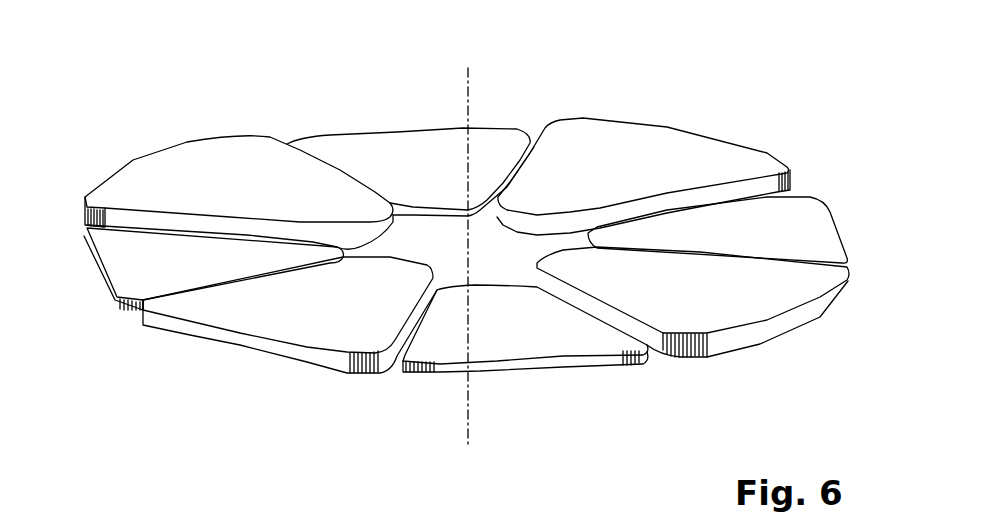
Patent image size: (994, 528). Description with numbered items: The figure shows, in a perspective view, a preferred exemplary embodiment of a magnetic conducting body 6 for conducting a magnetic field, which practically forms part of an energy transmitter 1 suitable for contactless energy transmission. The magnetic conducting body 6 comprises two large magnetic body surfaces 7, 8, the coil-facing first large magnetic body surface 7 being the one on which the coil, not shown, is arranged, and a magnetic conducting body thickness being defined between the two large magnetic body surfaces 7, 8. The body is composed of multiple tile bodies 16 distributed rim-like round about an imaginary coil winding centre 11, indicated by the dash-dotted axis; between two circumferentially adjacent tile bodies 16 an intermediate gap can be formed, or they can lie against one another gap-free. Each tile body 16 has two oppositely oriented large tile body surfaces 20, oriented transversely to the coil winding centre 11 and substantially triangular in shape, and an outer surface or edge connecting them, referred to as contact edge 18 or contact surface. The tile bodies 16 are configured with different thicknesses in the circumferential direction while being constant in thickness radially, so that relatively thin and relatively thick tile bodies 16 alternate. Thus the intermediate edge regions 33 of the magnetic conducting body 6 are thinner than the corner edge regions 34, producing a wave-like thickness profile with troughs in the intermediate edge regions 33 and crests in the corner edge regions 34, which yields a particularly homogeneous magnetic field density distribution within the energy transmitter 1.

The energy transmitter 1 is at (476, 247).
The magnetic conducting body 6 is at (476, 247).
The first large magnetic body surface 7 is at (218, 160).
The second large magnetic body surface 8 is at (128, 306).
The coil winding centre 11 is at (465, 110).
The tile body 16 is at (157, 278).
The contact edge 18 is at (190, 337).
The large tile body surface 20 is at (492, 370).
The intermediate edge region 33 is at (507, 112).
The corner edge region 34 is at (142, 142).